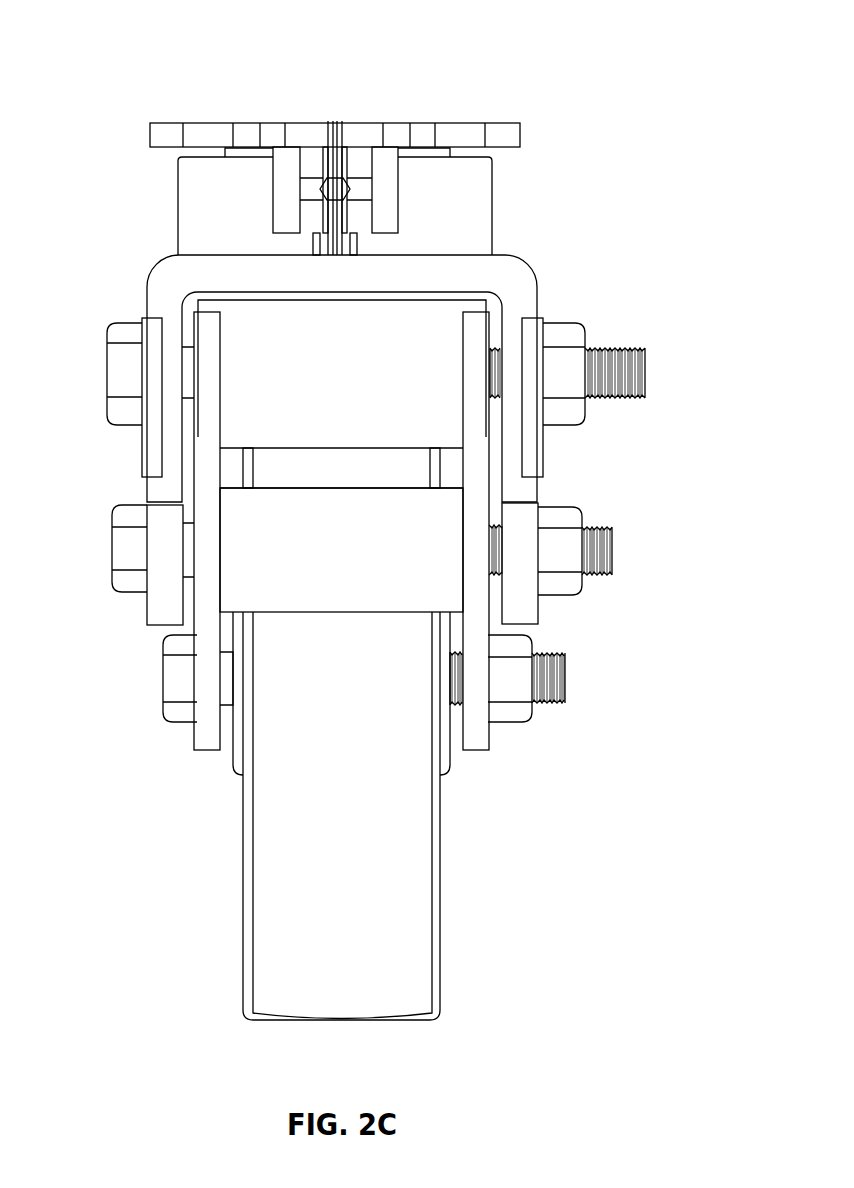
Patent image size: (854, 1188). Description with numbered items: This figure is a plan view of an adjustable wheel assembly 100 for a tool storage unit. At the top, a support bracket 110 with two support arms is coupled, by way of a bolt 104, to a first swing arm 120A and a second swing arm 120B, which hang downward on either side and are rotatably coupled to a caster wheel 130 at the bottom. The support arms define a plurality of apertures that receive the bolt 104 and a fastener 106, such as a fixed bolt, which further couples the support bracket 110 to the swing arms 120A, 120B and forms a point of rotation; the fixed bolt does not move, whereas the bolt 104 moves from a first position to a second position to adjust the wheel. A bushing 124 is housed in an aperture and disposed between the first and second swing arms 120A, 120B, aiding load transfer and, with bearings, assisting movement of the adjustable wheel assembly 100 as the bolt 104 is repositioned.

The adjustable wheel assembly 100 is at (626, 56).
The bolt 104 is at (645, 373).
The fastener 106 is at (612, 550).
The support bracket 110 is at (145, 254).
The first swing arm 120A is at (194, 733).
The second swing arm 120B is at (489, 737).
The bushing 124 is at (340, 590).
The caster wheel 130 is at (415, 887).